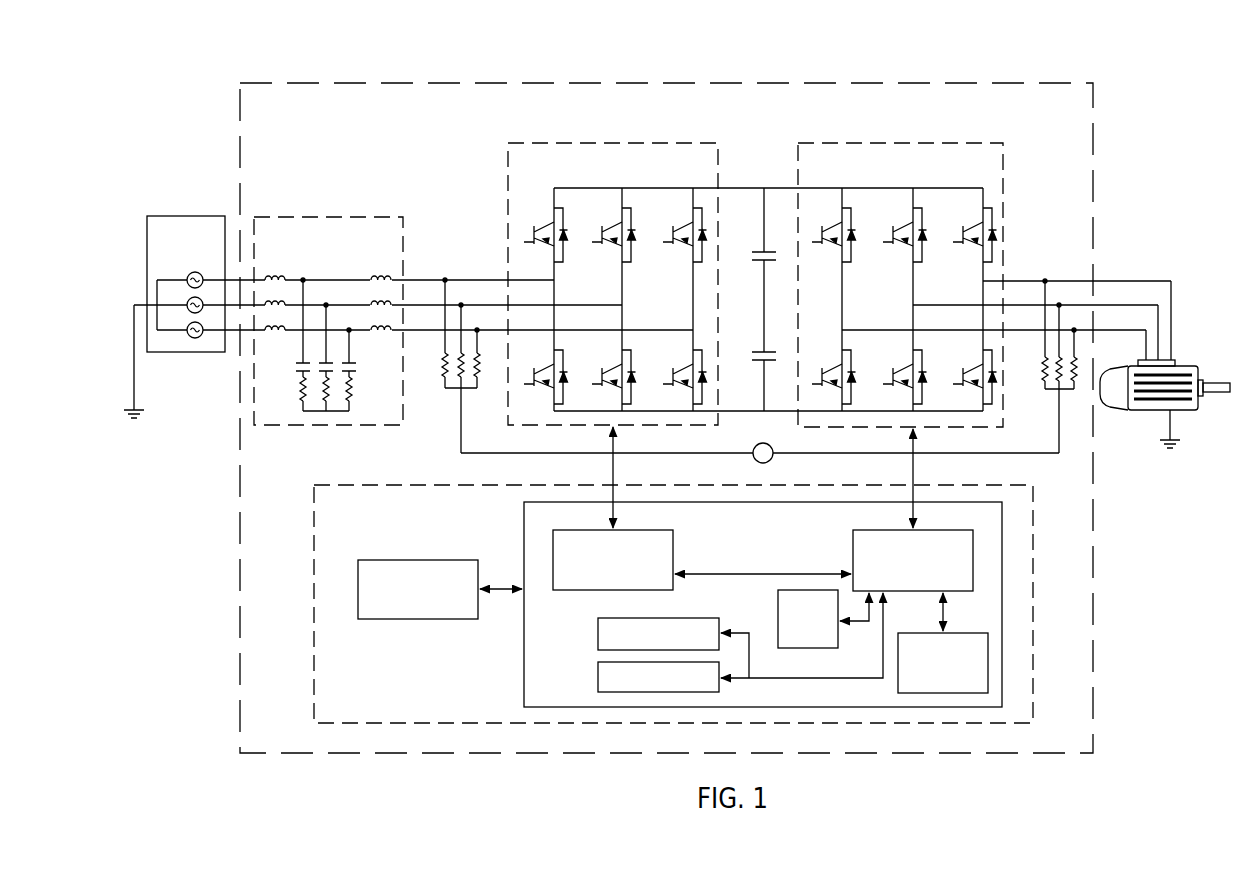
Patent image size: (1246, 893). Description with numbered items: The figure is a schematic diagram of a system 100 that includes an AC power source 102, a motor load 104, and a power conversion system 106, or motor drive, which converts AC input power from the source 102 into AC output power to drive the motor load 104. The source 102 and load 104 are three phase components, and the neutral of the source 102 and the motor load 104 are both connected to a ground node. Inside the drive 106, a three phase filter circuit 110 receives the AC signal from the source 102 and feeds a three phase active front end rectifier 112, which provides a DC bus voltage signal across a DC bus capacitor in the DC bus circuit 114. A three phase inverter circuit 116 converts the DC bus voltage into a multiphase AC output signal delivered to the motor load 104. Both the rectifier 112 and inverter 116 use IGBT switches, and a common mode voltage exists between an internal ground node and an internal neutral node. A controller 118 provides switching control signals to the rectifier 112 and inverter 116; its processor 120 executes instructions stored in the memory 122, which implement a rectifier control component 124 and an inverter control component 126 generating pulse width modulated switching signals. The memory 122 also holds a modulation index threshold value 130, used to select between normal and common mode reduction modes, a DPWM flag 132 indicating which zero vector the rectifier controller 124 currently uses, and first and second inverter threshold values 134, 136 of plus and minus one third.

The system 100 is at (251, 49).
The AC power source 102 is at (182, 216).
The motor load 104 is at (1183, 363).
The power conversion system 106 is at (656, 83).
The three phase filter circuit 110 is at (328, 217).
The three phase active front end rectifier 112 is at (616, 143).
The DC bus circuit 114 is at (791, 145).
The three phase inverter circuit 116 is at (899, 143).
The controller 118 is at (374, 485).
The processor 120 is at (424, 560).
The memory 122 is at (524, 518).
The rectifier control component 124 is at (674, 546).
The inverter control component 126 is at (853, 546).
The modulation index threshold value 130 is at (960, 632).
The DPWM flag 132 is at (778, 612).
The first inverter threshold value 134 is at (598, 636).
The second inverter threshold value 136 is at (598, 683).